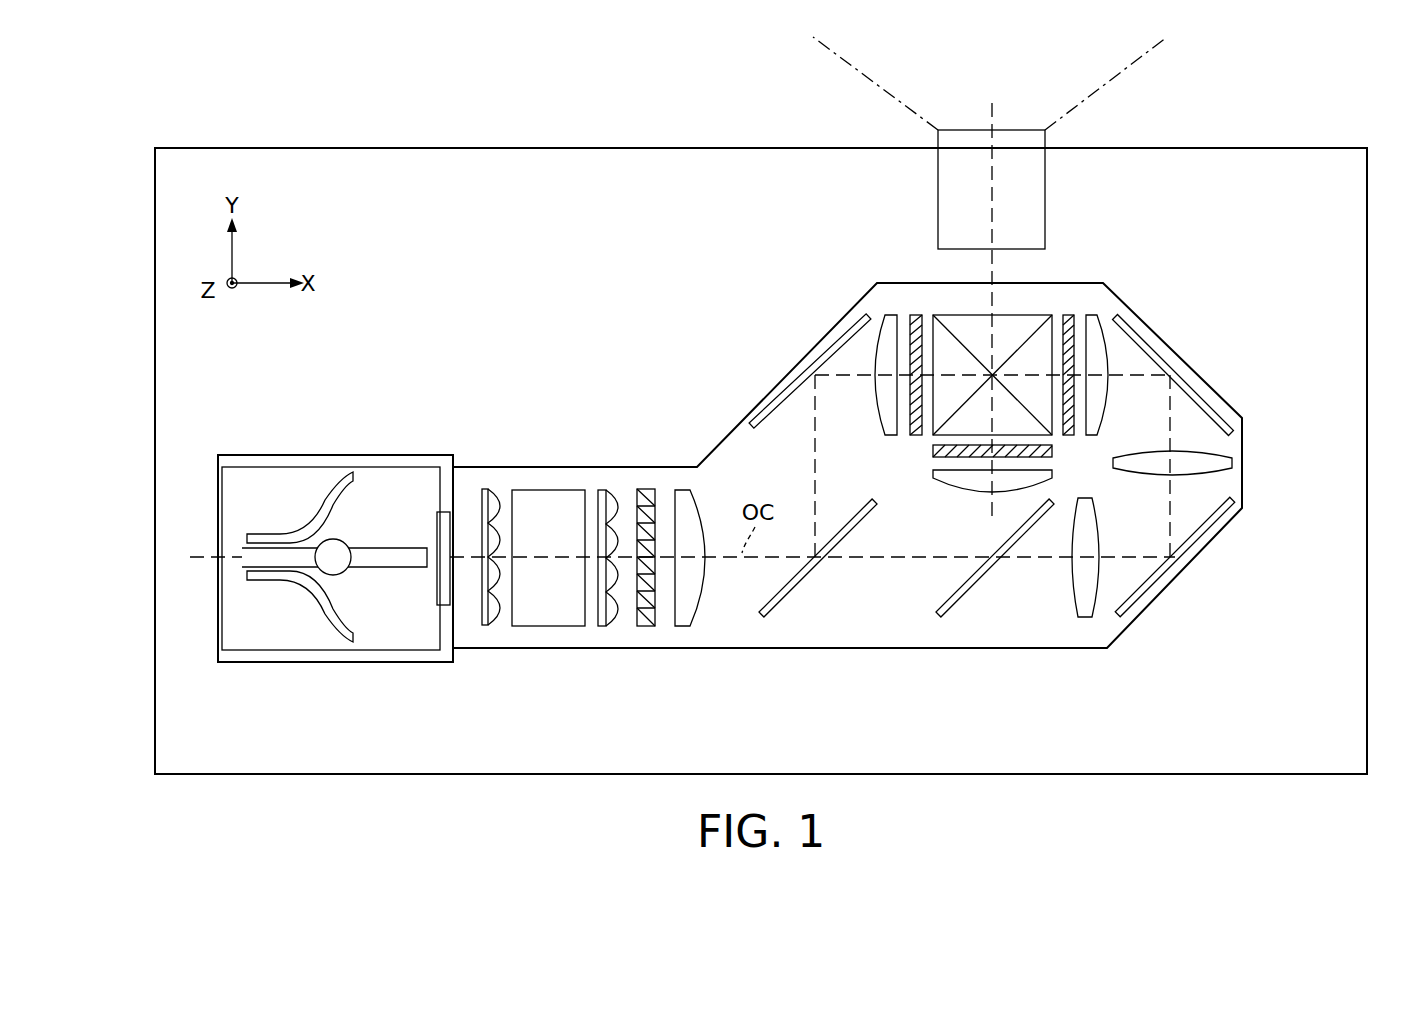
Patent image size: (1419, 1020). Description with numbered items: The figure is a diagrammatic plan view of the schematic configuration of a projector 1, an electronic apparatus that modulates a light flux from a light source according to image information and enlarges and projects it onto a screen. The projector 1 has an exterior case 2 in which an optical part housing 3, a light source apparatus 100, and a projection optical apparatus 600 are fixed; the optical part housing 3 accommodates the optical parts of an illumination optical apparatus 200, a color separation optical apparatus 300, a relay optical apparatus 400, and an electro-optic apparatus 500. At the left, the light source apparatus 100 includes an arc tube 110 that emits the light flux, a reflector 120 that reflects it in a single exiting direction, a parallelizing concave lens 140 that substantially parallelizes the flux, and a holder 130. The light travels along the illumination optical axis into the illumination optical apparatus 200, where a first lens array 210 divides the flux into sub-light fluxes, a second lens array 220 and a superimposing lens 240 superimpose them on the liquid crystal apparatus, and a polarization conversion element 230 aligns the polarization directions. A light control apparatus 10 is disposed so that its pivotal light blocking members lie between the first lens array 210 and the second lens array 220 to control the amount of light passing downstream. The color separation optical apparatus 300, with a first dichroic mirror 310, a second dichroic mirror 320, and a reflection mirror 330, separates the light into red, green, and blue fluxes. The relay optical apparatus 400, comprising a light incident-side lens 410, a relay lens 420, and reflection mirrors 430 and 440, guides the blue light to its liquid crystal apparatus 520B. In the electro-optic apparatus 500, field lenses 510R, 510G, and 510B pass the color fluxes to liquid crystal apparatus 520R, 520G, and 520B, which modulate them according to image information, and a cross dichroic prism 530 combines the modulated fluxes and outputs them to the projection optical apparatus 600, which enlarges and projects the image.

The projector 1 is at (312, 108).
The exterior case 2 is at (572, 148).
The optical part housing 3 is at (683, 650).
The light control apparatus 10 is at (550, 617).
The light source apparatus 100 is at (308, 440).
The arc tube 110 is at (345, 543).
The reflector 120 is at (290, 530).
The holder 130 is at (228, 455).
The parallelizing concave lens 140 is at (437, 580).
The illumination optical apparatus 200 is at (722, 405).
The first lens array 210 is at (490, 490).
The second lens array 220 is at (605, 490).
The polarization conversion element 230 is at (648, 489).
The superimposing lens 240 is at (683, 490).
The color separation optical apparatus 300 is at (898, 668).
The first dichroic mirror 310 is at (805, 585).
The second dichroic mirror 320 is at (978, 583).
The reflection mirror 330 is at (812, 365).
The relay optical apparatus 400 is at (1224, 669).
The light incident-side lens 410 is at (1083, 617).
The relay lens 420 is at (1240, 472).
The reflection mirror 430 is at (1165, 578).
The reflection mirror 440 is at (1180, 365).
The electro-optic apparatus 500 is at (784, 229).
The field lens 510R is at (878, 310).
The field lens 510G is at (933, 478).
The field lens 510B is at (1108, 308).
The liquid crystal apparatus 520R is at (915, 305).
The liquid crystal apparatus 520G is at (933, 453).
The liquid crystal apparatus 520B is at (1070, 305).
The cross dichroic prism 530 is at (945, 300).
The projection optical apparatus 600 is at (1048, 212).